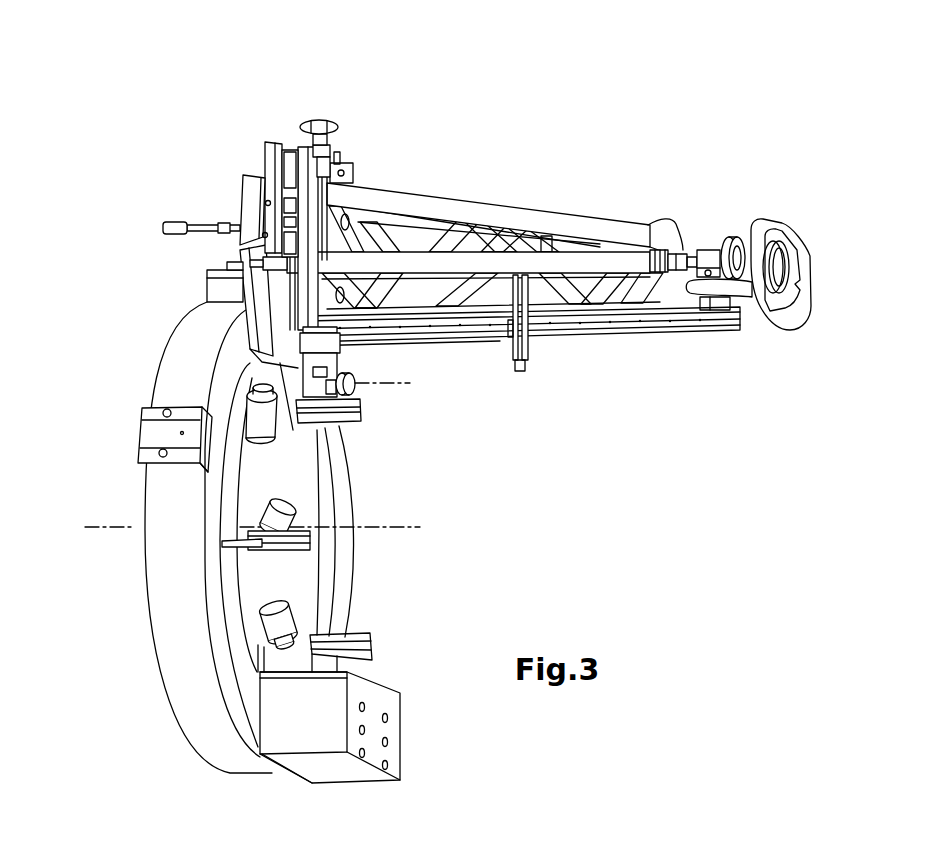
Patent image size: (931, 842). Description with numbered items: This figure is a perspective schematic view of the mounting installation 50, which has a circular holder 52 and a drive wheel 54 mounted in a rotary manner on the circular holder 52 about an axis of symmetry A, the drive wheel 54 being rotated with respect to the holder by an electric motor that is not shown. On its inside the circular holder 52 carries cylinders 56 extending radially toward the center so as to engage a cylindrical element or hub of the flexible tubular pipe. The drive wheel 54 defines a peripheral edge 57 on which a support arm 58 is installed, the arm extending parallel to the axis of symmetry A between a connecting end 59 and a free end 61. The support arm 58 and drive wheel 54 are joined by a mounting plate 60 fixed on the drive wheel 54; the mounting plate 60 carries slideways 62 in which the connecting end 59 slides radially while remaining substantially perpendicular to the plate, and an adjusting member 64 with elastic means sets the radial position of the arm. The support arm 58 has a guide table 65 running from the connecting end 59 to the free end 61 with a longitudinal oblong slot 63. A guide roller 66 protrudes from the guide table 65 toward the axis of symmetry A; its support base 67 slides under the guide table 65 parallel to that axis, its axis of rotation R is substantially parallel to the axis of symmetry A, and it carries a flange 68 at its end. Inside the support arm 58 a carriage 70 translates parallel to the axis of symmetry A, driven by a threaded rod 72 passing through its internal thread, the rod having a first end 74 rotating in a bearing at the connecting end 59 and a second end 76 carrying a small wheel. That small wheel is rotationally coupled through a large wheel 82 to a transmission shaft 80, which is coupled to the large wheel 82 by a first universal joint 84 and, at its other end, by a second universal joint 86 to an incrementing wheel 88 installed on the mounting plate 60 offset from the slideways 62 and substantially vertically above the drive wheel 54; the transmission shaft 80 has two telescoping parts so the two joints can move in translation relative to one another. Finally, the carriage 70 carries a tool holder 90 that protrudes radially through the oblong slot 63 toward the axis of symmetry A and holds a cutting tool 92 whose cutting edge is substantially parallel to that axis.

The mounting installation 50 is at (512, 468).
The circular holder 52 is at (166, 582).
The drive wheel 54 is at (347, 553).
The cylinders 56 is at (258, 440).
The peripheral edge 57 is at (251, 364).
The support arm 58 is at (466, 204).
The connecting end 59 is at (356, 96).
The mounting plate 60 is at (253, 320).
The free end 61 is at (788, 194).
The slideways 62 is at (287, 168).
The oblong slot 63 is at (616, 326).
The adjusting member 64 is at (316, 119).
The guide table 65 is at (430, 338).
The guide roller 66 is at (352, 373).
The support base 67 is at (266, 436).
The flange 68 is at (345, 449).
The carriage 70 is at (547, 233).
The threaded rod 72 is at (463, 283).
The first end 74 is at (362, 297).
The second end 76 is at (755, 214).
The transmission shaft 80 is at (583, 263).
The large wheel 82 is at (727, 240).
The first universal joint 84 is at (683, 250).
The second universal joint 86 is at (309, 256).
The incrementing wheel 88 is at (205, 270).
The tool holder 90 is at (527, 349).
The cutting tool 92 is at (521, 371).
The axis of symmetry A is at (400, 526).
The axis of rotation R is at (391, 383).